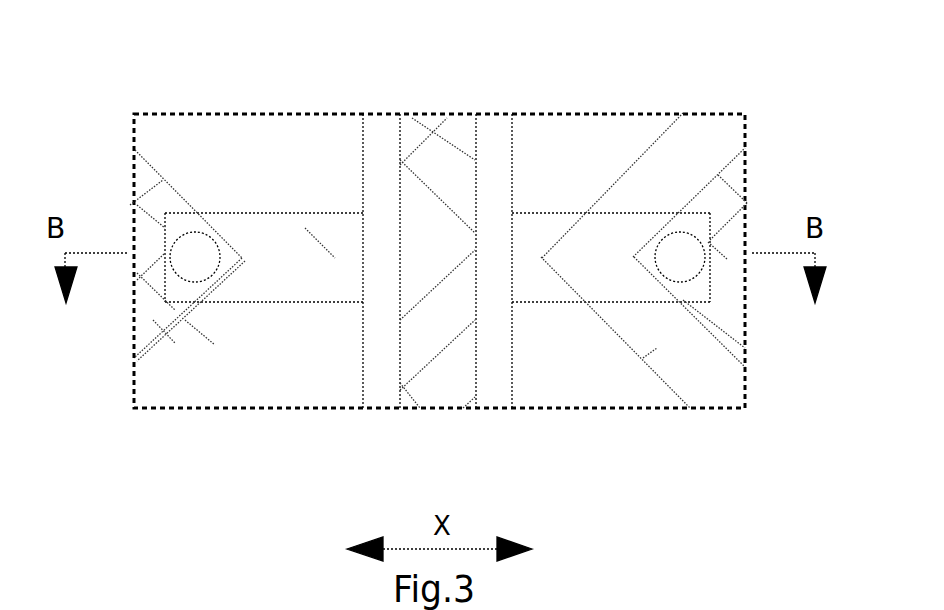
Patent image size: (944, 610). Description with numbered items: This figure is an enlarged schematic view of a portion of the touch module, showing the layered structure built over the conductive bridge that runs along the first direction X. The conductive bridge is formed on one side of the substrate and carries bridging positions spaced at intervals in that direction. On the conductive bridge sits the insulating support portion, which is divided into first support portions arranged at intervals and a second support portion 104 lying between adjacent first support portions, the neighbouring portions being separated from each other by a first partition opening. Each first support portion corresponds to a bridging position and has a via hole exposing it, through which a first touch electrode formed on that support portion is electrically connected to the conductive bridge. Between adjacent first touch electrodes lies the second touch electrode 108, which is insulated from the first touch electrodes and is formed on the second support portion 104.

The second support portion 104 is at (497, 137).
The second touch electrode 108 is at (403, 125).